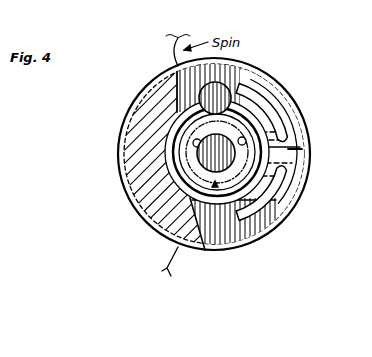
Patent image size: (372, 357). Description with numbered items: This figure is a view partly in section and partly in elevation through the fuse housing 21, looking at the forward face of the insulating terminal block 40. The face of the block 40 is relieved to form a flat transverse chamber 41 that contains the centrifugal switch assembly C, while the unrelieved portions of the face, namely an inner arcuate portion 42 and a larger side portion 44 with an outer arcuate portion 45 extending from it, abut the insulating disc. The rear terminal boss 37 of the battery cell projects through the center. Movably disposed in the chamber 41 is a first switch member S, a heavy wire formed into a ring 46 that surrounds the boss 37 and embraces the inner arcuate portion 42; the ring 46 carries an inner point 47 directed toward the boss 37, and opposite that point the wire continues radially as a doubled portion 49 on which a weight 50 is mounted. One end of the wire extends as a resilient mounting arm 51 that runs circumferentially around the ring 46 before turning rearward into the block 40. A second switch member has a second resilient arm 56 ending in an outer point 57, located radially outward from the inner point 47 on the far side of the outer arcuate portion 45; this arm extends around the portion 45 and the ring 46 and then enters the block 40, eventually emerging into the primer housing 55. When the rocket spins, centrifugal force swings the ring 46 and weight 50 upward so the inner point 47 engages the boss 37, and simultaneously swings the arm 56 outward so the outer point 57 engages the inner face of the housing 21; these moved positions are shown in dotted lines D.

The housing 21 is at (236, 250).
The boss 37 is at (198, 128).
The terminal block 40 is at (298, 136).
The transverse chamber 41 is at (350, 144).
The inner arcuate portion 42 is at (288, 128).
The side portion 44 is at (148, 138).
The outer arcuate portion 45 is at (205, 203).
The ring 46 is at (255, 157).
The inner point 47 is at (210, 184).
The doubled portion 49 is at (160, 91).
The weight 50 is at (250, 92).
The resilient mounting arm 51 is at (284, 126).
The primer housing 55 is at (300, 216).
The second resilient arm 56 is at (290, 198).
The outer point 57 is at (256, 244).
The centrifugal switch assembly C is at (233, 60).
The dotted lines D is at (276, 70).
The first switch member S is at (281, 96).